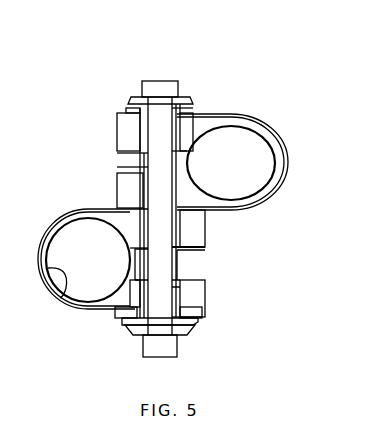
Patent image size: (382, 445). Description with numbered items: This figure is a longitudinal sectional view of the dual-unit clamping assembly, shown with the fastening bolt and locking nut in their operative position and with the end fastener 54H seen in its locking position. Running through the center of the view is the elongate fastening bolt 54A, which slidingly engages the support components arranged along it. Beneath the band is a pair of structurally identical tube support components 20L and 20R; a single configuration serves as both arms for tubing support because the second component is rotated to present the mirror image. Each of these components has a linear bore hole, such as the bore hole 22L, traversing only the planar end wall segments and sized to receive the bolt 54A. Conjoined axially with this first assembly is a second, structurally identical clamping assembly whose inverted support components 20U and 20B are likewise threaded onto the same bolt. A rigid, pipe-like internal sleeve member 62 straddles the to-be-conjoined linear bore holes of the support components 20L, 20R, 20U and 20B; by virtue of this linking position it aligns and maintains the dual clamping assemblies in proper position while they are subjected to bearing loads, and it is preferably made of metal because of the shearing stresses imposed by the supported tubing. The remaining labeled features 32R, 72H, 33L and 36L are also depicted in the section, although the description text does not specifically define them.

The end fastener 54H is at (166, 80).
The right washer 32R is at (127, 108).
The tube support component 20R is at (118, 143).
The fastening bolt 54A is at (143, 163).
The tube support component 20L is at (117, 182).
The upper ring with hole 72H is at (252, 130).
The internal sleeve member 62 is at (188, 212).
The inverted support component 20B is at (205, 247).
The inverted support component 20U is at (205, 301).
The linear bore hole 22L is at (60, 297).
The left spacer block 33L is at (117, 320).
The left nut collar 36L is at (133, 335).